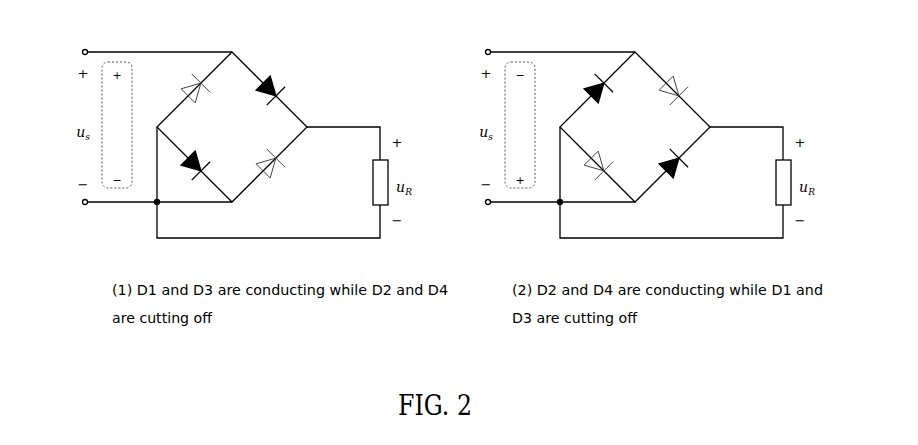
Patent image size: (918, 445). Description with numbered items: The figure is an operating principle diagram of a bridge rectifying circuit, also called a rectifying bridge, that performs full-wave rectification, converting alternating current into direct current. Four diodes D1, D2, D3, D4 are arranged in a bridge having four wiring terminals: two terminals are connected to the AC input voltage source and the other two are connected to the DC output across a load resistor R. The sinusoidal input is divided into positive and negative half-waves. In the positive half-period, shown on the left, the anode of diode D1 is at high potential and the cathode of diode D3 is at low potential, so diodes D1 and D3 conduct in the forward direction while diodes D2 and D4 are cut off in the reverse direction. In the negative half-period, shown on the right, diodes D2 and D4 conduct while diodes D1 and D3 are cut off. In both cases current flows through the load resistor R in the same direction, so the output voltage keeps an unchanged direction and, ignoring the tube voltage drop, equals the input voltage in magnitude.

The diode D1 is at (472, 81).
The diode D2 is at (472, 176).
The diode D3 is at (389, 169).
The diode D4 is at (388, 87).
The load resistor R is at (571, 182).